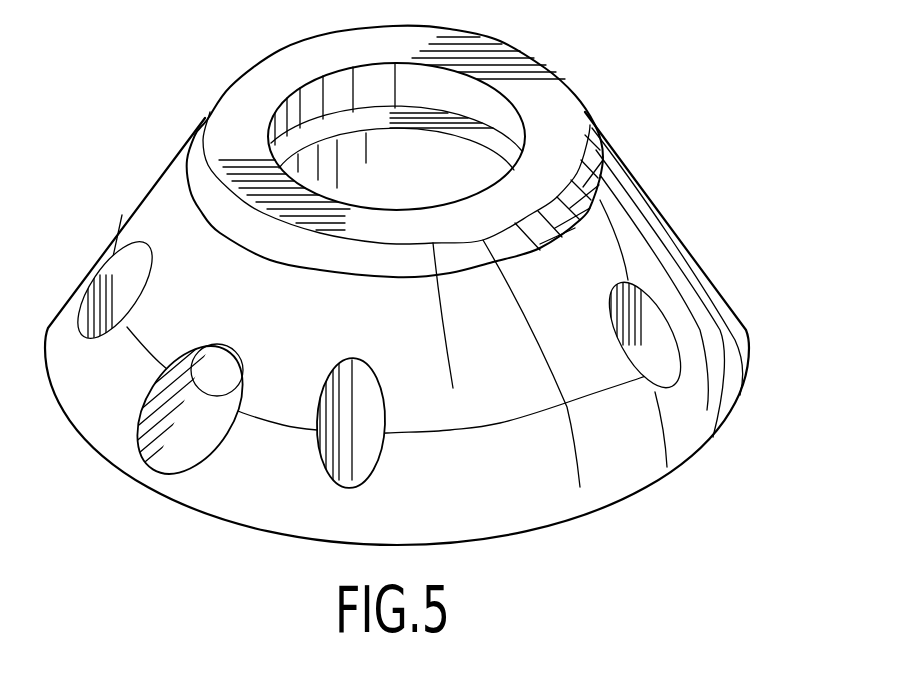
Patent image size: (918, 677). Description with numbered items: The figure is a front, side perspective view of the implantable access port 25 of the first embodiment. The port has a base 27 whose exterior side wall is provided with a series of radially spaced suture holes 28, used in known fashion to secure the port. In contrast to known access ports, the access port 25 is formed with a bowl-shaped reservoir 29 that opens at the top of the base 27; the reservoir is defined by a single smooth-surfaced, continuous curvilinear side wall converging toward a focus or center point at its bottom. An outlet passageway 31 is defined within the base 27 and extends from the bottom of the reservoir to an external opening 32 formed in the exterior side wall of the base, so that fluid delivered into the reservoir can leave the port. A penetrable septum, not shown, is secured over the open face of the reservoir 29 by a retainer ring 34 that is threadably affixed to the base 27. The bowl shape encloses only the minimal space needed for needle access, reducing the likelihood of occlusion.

The implantable access port 25 is at (680, 70).
The base 27 is at (632, 461).
The suture holes 28 is at (365, 386).
The bowl-shaped reservoir 29 is at (461, 181).
The outlet passageway 31 is at (199, 352).
The external opening 32 is at (178, 428).
The retainer ring 34 is at (490, 246).